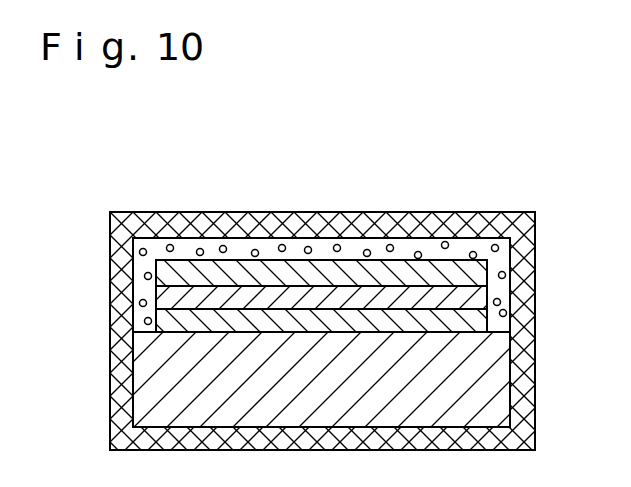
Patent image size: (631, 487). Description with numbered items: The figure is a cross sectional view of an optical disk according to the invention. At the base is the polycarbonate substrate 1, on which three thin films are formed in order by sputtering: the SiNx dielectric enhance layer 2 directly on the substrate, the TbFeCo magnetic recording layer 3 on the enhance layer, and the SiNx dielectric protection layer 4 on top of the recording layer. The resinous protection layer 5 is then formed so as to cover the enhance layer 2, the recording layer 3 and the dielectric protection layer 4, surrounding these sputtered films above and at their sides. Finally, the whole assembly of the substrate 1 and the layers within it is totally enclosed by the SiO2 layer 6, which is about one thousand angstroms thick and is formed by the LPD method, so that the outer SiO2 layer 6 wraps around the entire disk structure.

The polycarbonate substrate 1 is at (496, 382).
The SiNx dielectric enhance layer 2 is at (482, 319).
The TbFeCo magnetic recording layer 3 is at (486, 299).
The SiNx dielectric protection layer 4 is at (478, 275).
The resinous protection layer 5 is at (455, 247).
The SiO2 layer 6 is at (520, 419).